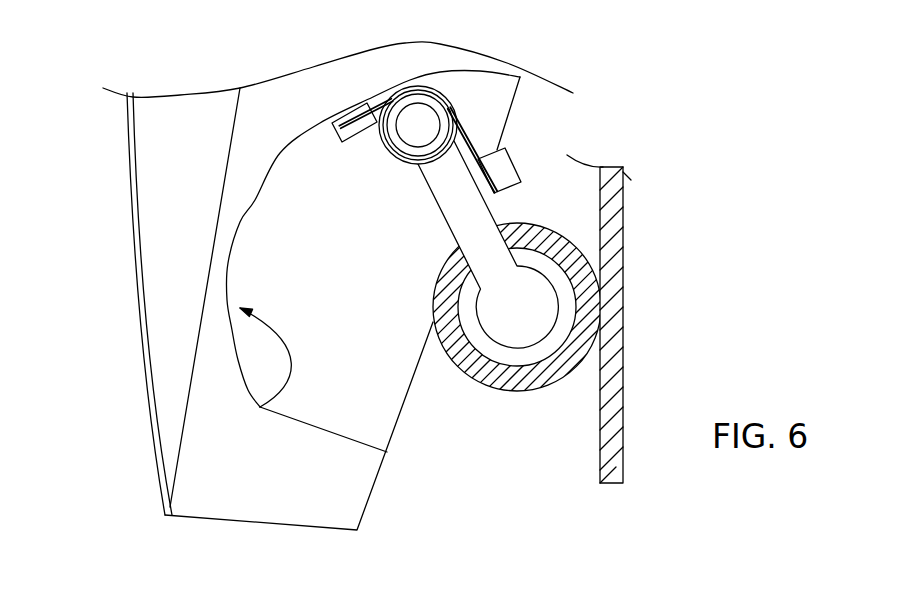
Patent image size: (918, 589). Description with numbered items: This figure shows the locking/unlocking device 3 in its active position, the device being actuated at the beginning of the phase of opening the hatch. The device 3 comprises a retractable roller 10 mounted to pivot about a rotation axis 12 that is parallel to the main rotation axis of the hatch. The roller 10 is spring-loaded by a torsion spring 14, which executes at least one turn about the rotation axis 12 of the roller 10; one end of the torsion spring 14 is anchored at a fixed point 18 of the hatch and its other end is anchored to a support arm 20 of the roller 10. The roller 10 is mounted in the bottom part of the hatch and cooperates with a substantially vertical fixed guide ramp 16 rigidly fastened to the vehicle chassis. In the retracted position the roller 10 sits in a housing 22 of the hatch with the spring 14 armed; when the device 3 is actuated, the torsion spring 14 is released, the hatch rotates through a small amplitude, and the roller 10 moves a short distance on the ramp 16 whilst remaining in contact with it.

The locking/unlocking device 3 is at (383, 200).
The retractable roller 10 is at (513, 387).
The rotation axis 12 is at (423, 127).
The torsion spring 14 is at (497, 150).
The fixed guide ramp 16 is at (623, 218).
The fixed point 18 is at (357, 102).
The support arm 20 is at (460, 200).
The housing 22 is at (260, 407).